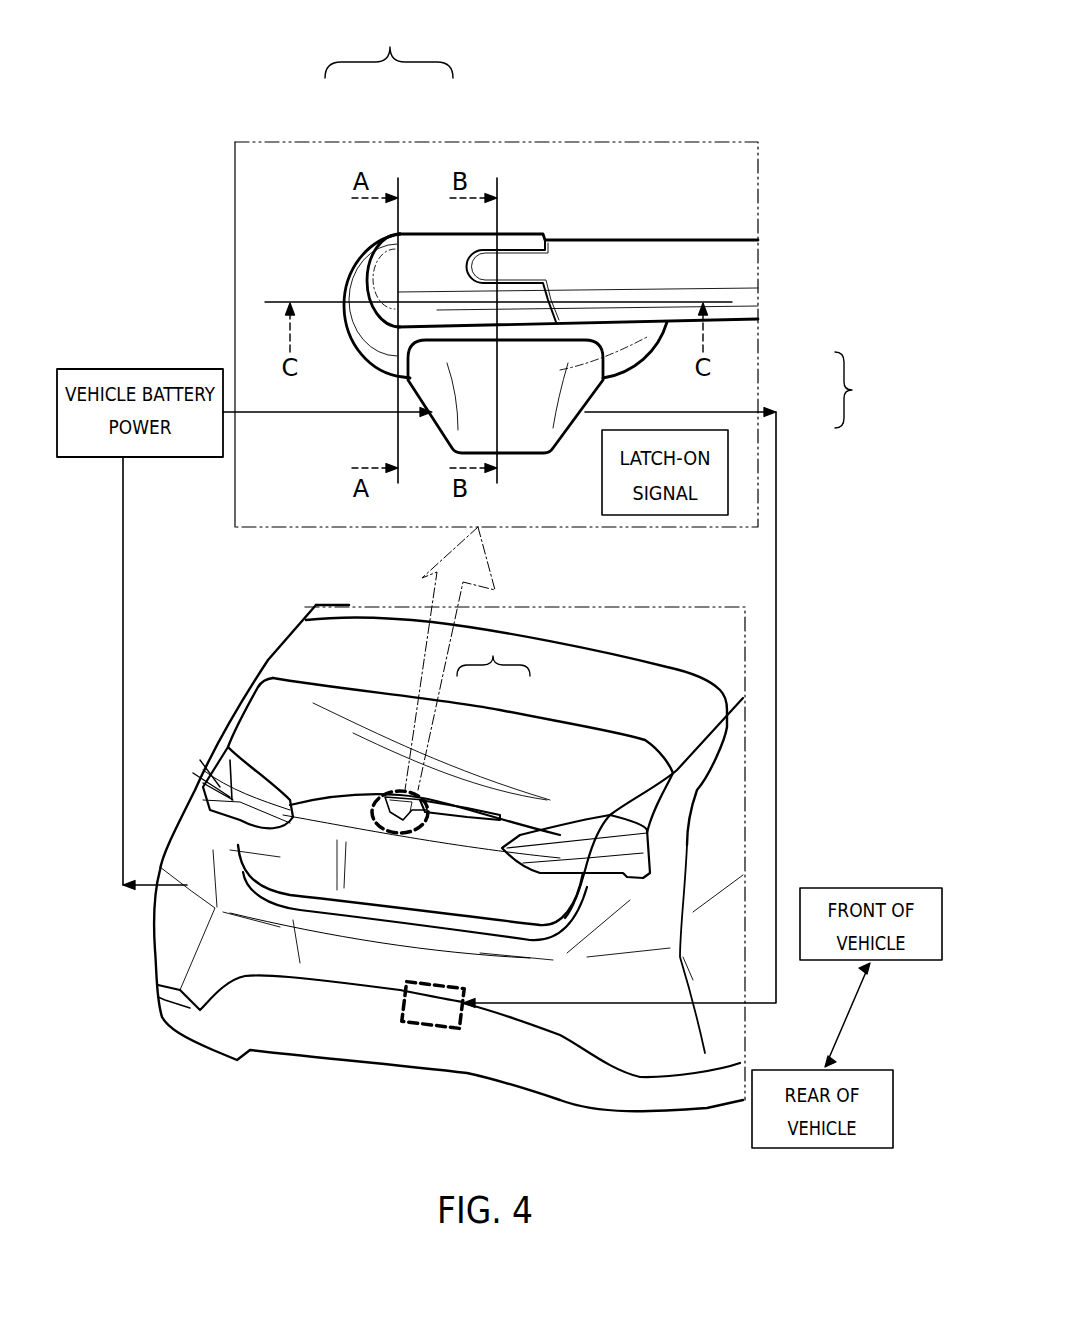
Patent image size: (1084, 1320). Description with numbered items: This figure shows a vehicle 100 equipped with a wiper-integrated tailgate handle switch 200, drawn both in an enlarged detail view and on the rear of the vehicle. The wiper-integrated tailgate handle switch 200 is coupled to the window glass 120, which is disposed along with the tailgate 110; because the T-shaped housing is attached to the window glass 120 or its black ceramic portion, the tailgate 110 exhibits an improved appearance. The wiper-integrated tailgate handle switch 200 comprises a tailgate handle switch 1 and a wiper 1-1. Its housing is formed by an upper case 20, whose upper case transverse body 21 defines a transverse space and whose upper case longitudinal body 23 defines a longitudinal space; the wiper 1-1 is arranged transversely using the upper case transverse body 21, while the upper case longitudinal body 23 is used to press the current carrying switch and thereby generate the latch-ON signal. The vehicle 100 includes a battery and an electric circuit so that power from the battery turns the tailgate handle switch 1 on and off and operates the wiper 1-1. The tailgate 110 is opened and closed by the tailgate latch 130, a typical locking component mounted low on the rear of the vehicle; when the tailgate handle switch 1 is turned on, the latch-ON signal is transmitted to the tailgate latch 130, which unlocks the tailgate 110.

The tailgate handle switch 1 is at (347, 262).
The wiper 1-1 is at (428, 262).
The upper case 20 is at (861, 390).
The upper case transverse body 21 is at (627, 342).
The upper case longitudinal body 23 is at (543, 397).
The vehicle 100 is at (697, 628).
The tailgate 110 is at (233, 820).
The window glass 120 is at (283, 242).
The tailgate latch 130 is at (430, 1027).
The wiper-integrated tailgate handle switch 200 is at (427, 399).